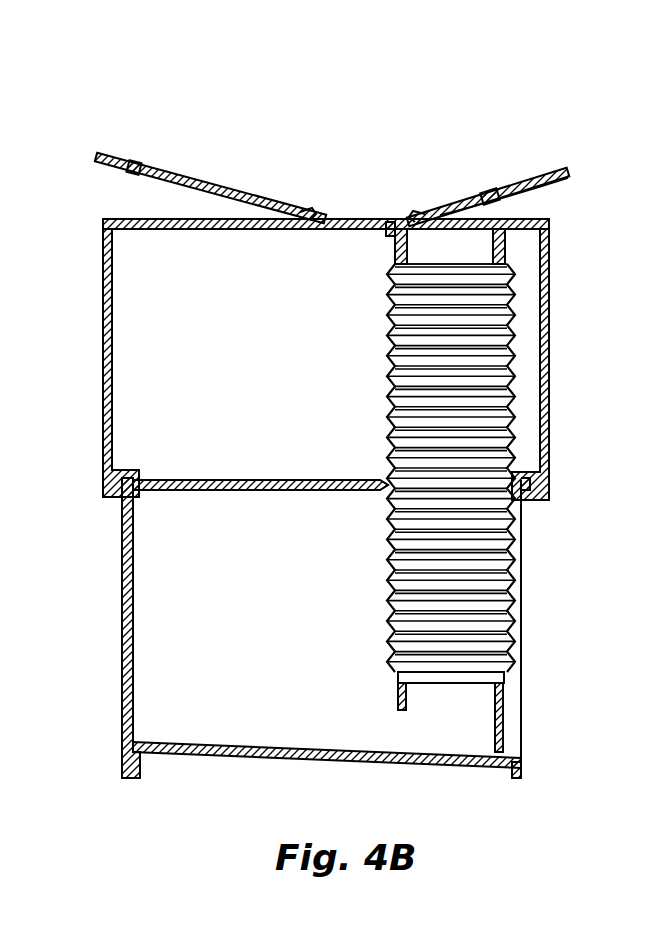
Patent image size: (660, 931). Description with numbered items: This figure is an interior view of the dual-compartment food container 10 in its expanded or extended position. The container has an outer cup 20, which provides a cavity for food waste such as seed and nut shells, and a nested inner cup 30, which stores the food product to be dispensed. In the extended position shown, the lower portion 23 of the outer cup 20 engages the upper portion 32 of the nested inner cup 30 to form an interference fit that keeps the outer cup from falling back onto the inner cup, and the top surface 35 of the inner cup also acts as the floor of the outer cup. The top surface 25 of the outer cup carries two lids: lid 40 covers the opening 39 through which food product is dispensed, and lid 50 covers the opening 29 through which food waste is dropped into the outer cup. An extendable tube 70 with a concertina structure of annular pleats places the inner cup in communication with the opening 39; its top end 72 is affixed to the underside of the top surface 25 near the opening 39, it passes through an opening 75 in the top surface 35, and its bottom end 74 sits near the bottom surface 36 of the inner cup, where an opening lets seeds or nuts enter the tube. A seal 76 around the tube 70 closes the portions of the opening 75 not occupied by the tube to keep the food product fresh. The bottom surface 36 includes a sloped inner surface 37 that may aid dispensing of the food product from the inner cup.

The dual-compartment food container 10 is at (268, 88).
The outer cup 20 is at (284, 328).
The lower portion of outer cup 23 is at (100, 480).
The top surface 25 is at (360, 218).
The opening in top surface 29 is at (118, 218).
The nested inner cup 30 is at (328, 624).
The upper portion of nested inner cup 32 is at (122, 520).
The top surface of nested inner cup 35 is at (266, 480).
The bottom surface 36 is at (197, 755).
The sloped inner surface 37 is at (278, 742).
The opening 39 is at (522, 198).
The lid 40 is at (520, 170).
The lid 50 is at (128, 158).
The extendable tube 70 is at (514, 400).
The top end of expandable tube 72 is at (505, 243).
The bottom end of expandable tube 74 is at (406, 710).
The opening in top surface of inner cup 75 is at (530, 505).
The seal 76 is at (383, 487).